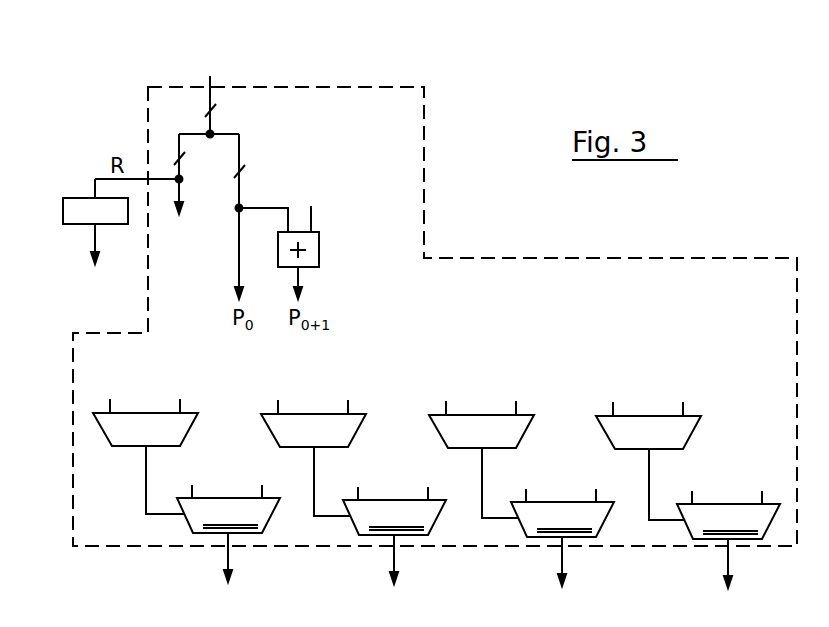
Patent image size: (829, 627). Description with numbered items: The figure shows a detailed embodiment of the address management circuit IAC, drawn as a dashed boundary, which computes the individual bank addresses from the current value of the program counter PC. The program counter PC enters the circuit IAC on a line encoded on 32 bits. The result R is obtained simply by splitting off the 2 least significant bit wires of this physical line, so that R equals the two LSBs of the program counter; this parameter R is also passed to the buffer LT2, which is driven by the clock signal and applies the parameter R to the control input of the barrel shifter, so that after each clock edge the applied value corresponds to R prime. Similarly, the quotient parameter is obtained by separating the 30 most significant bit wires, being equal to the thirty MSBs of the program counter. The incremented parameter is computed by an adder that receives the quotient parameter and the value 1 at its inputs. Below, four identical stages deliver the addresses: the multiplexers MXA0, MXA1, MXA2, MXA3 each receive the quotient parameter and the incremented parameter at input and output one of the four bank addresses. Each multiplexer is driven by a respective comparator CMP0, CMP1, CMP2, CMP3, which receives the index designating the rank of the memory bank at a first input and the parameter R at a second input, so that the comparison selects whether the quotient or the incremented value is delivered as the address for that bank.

The 32-bit program counter value 32 is at (225, 111).
The 30 MSB wires 30 is at (255, 216).
The two LSB wires 2 is at (187, 174).
The value 1 is at (311, 208).
The program counter PC is at (211, 93).
The buffer LT2 is at (73, 198).
The address management circuit IAC is at (130, 545).
The comparator CMP0 is at (193, 427).
The comparator CMP1 is at (340, 401).
The comparator CMP2 is at (508, 402).
The comparator CMP3 is at (675, 403).
The multiplexer MXA0 is at (214, 526).
The multiplexer MXA1 is at (381, 528).
The multiplexer MXA2 is at (549, 529).
The multiplexer MXA3 is at (715, 531).